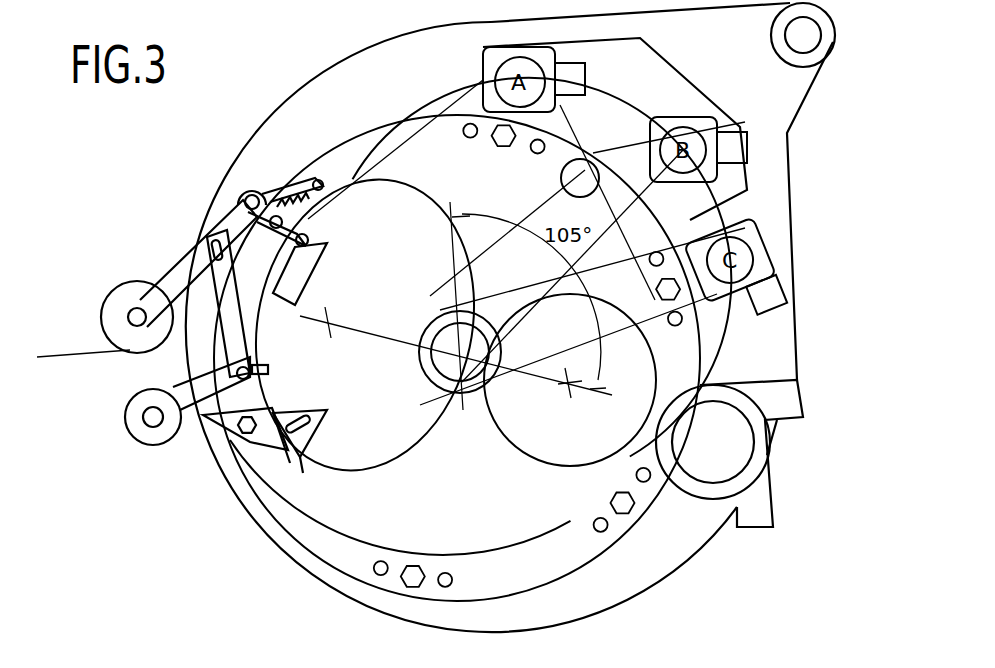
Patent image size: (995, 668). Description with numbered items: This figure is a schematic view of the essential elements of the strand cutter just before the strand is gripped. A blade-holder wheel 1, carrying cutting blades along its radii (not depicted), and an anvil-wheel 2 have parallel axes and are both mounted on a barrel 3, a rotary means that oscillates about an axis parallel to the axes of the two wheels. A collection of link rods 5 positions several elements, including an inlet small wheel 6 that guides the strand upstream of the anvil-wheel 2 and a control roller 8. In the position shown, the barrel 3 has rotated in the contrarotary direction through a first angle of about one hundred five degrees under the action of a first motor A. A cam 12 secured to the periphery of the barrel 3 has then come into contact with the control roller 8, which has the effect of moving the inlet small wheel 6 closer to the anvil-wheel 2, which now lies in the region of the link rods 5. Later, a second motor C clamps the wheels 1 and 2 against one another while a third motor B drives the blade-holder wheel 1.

The blade-holder wheel 1 is at (552, 458).
The anvil-wheel 2 is at (385, 445).
The barrel 3 is at (572, 498).
The link rods 5 is at (178, 250).
The inlet small wheel 6 is at (117, 295).
The control roller 8 is at (312, 238).
The cam 12 is at (305, 272).